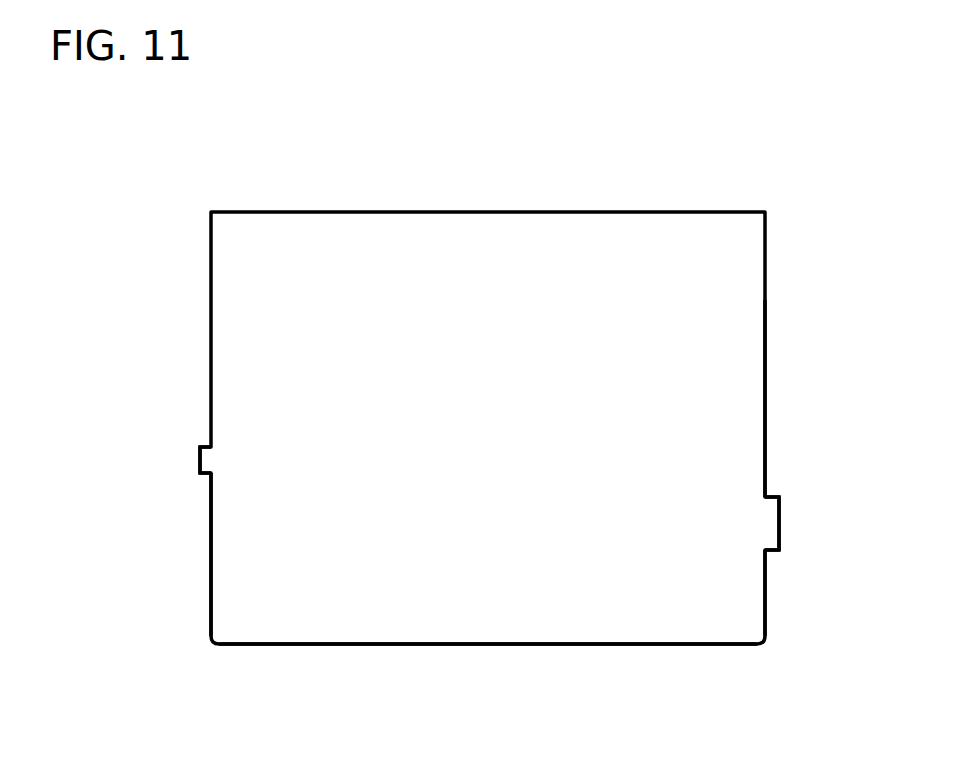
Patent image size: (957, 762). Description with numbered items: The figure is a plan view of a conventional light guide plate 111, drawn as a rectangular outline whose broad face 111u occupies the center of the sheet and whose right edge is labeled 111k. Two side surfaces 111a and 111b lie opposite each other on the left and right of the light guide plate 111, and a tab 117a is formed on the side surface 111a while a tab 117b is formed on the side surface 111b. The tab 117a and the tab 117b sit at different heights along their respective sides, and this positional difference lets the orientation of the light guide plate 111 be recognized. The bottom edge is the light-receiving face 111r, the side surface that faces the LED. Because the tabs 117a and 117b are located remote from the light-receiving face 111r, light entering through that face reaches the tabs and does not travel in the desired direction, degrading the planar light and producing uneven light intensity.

The light guide plate 111 is at (211, 211).
The upper surface of cell 111u is at (480, 404).
The side surface of cell 111k is at (768, 402).
The side surface 111a is at (211, 548).
The side surface 111b is at (766, 585).
The light-receiving face 111r is at (455, 645).
The tab 117a is at (200, 460).
The tab 117b is at (779, 517).